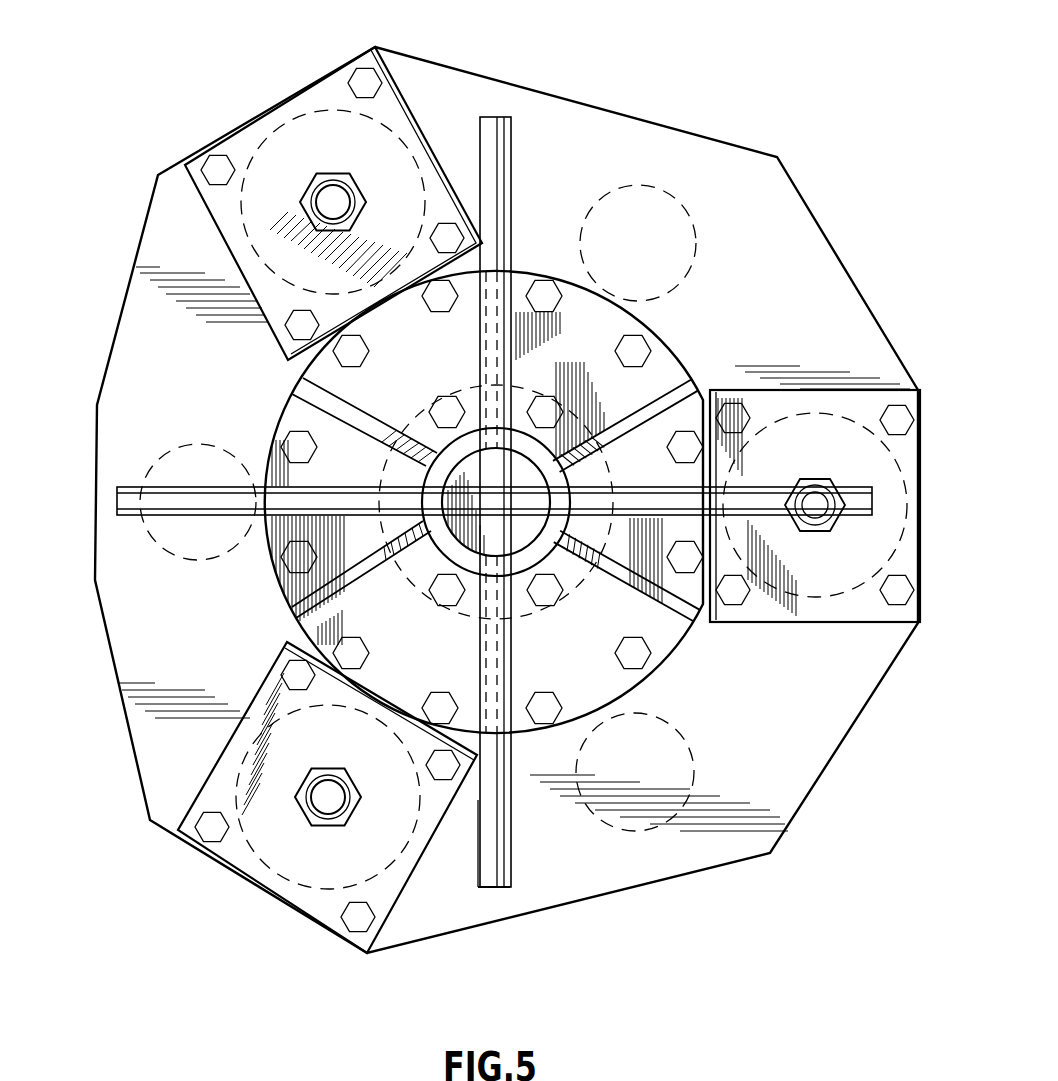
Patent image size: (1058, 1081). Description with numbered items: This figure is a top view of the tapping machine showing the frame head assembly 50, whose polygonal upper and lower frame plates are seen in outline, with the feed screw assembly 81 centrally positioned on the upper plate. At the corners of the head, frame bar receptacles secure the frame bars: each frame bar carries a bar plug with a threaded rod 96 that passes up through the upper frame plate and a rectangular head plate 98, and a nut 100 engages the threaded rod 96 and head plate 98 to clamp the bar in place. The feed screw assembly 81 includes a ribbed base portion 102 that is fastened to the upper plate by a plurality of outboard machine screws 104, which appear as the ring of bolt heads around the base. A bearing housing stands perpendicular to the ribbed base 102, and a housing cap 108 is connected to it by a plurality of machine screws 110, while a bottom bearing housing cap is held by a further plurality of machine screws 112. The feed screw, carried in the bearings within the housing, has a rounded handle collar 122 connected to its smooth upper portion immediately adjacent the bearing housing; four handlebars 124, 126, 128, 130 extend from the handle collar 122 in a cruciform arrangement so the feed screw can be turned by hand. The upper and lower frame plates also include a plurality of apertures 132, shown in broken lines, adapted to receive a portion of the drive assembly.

The frame head assembly 50 is at (772, 183).
The feed screw assembly 81 is at (300, 593).
The threaded rod 96 is at (325, 198).
The head plate 98 is at (323, 92).
The nut 100 is at (328, 192).
The ribbed base portion 102 is at (668, 395).
The outboard machine screws 104 is at (543, 288).
The housing cap 108 is at (428, 485).
The machine screws 110 is at (522, 412).
The machine screws 112 is at (442, 410).
The handle collar 122 is at (511, 501).
The handlebar 124 is at (873, 510).
The handlebar 126 is at (503, 137).
The handlebar 128 is at (125, 504).
The handlebar 130 is at (498, 866).
The apertures 132 is at (663, 190).